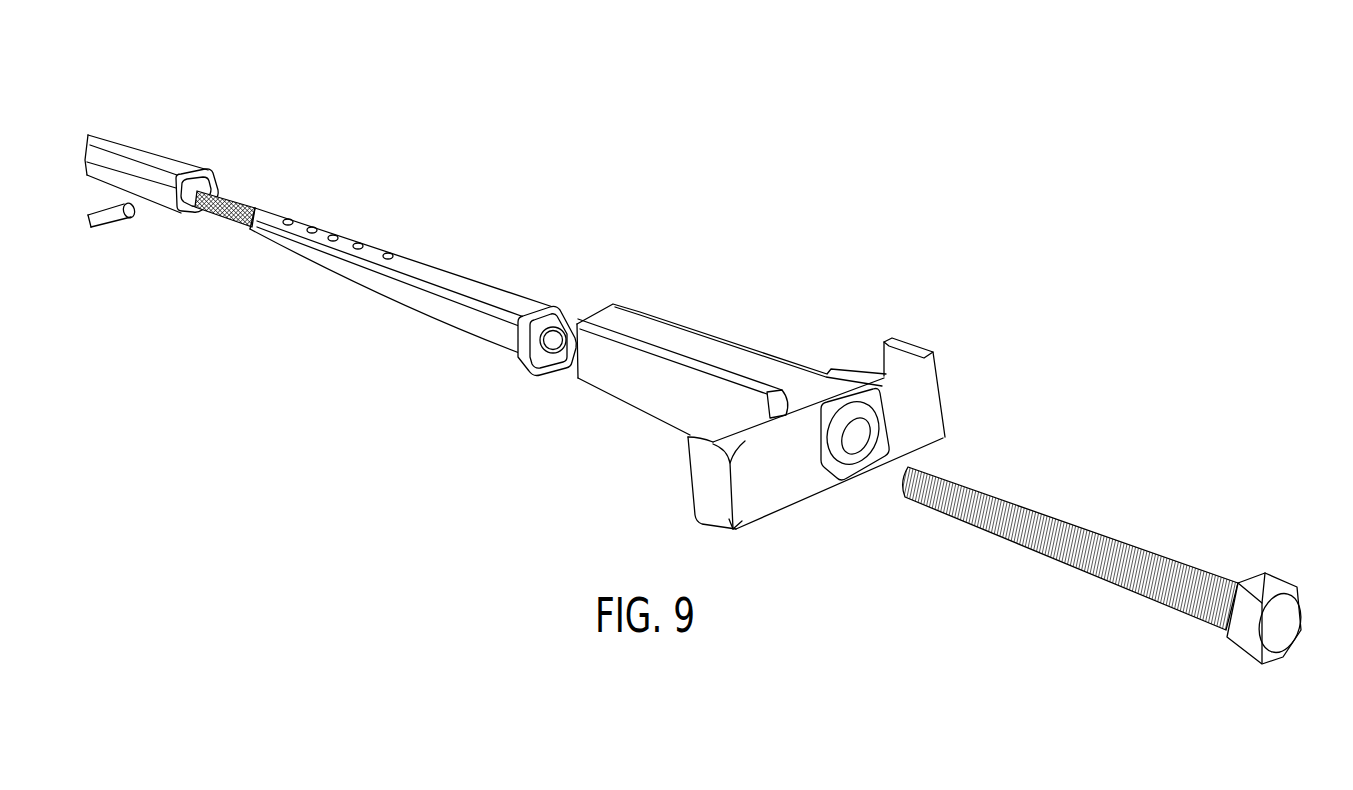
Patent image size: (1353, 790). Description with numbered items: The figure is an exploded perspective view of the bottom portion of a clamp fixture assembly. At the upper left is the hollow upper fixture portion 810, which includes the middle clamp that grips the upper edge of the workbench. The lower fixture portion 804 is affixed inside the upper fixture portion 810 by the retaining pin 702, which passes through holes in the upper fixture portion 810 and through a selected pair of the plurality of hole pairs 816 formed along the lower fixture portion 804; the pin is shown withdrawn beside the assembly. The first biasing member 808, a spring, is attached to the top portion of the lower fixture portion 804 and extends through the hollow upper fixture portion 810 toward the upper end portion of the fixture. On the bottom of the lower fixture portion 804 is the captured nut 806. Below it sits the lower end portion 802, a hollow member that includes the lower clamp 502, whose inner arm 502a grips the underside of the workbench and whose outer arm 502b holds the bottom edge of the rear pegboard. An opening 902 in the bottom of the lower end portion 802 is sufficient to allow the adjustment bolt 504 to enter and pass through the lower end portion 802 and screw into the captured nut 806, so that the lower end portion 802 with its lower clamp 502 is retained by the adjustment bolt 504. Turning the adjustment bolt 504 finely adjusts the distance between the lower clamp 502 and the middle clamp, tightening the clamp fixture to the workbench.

The upper fixture portion 810 is at (133, 149).
The retaining pin 702 is at (130, 220).
The first biasing member 808 is at (222, 218).
The lower fixture portion 804 is at (422, 311).
The hole pairs 816 is at (374, 191).
The captured nut 806 is at (557, 309).
The lower end portion 802 is at (685, 328).
The lower clamp 502 is at (905, 562).
The inner arm 502a is at (692, 511).
The outer arm 502b is at (945, 386).
The opening 902 is at (990, 456).
The adjustment bolt 504 is at (1219, 570).